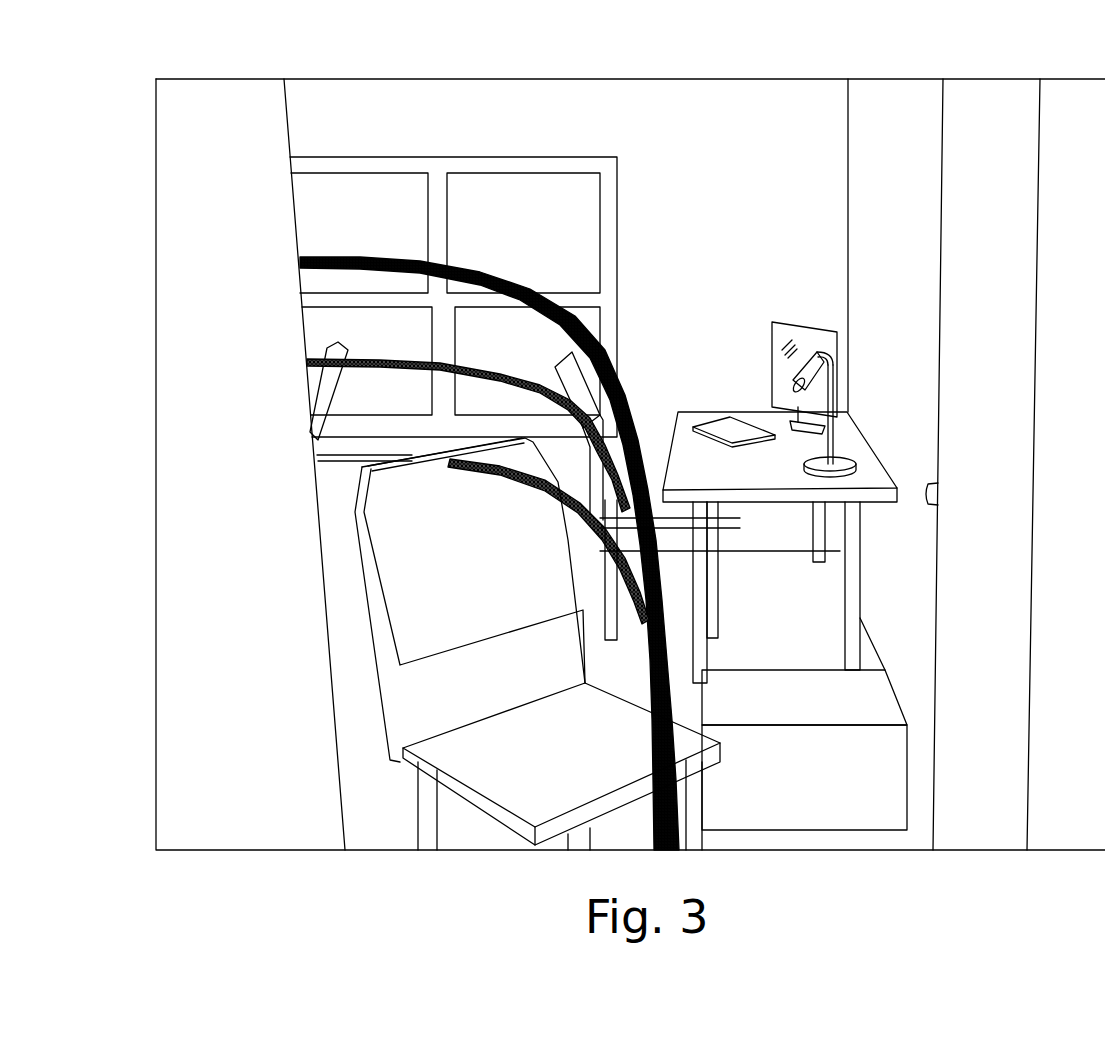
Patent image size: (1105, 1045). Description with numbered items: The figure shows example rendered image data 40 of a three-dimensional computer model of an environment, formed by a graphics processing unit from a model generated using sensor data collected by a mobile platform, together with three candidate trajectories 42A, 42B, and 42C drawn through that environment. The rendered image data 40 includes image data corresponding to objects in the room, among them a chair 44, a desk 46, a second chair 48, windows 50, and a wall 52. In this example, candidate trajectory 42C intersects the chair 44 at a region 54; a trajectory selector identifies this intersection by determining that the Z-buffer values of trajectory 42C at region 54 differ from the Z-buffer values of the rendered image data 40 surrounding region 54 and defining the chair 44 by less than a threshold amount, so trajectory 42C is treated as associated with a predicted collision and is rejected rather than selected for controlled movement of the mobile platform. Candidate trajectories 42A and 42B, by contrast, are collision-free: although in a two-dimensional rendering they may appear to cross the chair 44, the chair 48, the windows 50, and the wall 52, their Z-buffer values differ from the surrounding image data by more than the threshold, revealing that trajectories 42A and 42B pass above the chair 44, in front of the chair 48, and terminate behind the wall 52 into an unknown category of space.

The rendered image data 40 is at (738, 146).
The candidate trajectory 42A is at (493, 270).
The candidate trajectory 42B is at (382, 362).
The candidate trajectory 42C is at (513, 480).
The chair 44 is at (402, 602).
The desk 46 is at (735, 473).
The chair 48 is at (563, 363).
The windows 50 is at (442, 165).
The wall 52 is at (288, 117).
The region 54 is at (438, 470).